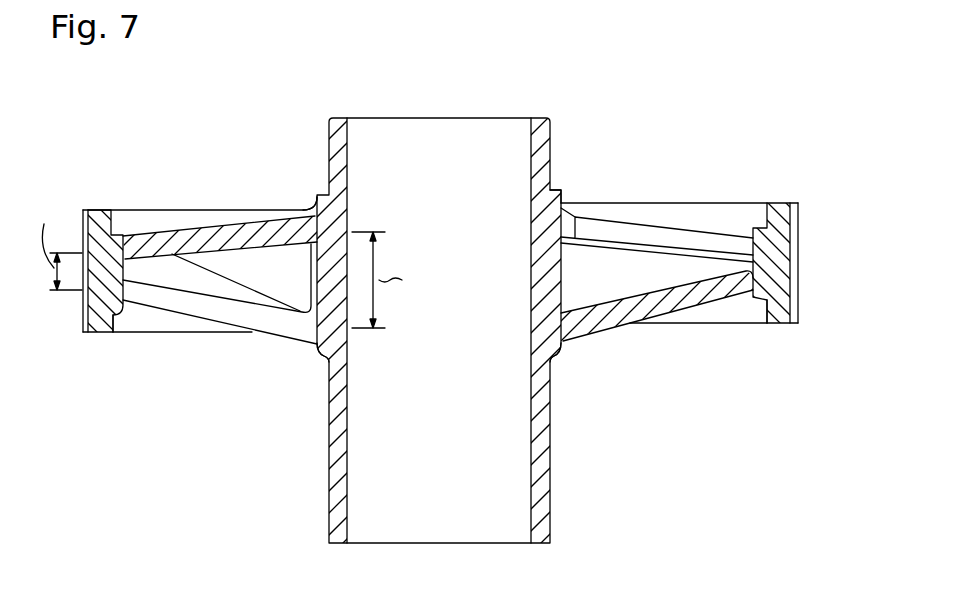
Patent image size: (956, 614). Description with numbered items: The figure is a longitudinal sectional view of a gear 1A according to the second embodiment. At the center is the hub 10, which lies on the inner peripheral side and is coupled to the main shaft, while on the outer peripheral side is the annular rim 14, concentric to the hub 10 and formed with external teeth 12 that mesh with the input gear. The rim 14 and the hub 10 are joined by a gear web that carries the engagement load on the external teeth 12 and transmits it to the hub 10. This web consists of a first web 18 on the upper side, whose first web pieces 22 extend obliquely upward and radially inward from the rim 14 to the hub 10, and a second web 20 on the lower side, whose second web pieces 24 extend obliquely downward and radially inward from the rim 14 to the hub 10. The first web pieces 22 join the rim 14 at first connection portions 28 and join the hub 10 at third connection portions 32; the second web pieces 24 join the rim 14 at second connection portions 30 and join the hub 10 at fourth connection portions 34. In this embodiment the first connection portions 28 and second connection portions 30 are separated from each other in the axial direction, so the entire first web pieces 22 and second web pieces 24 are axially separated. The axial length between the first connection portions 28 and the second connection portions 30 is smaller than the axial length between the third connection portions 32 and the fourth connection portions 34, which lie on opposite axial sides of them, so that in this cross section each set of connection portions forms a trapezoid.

The gear 1A is at (583, 537).
The hub 10 is at (330, 508).
The external teeth 12 is at (798, 225).
The rim 14 is at (781, 203).
The first web 18 is at (421, 208).
The second web 20 is at (467, 338).
The first web pieces 22 is at (237, 232).
The second web pieces 24 is at (268, 335).
The first connection portions 28 is at (127, 248).
The second connection portions 30 is at (126, 302).
The third connection portions 32 is at (307, 216).
The fourth connection portions 34 is at (315, 335).